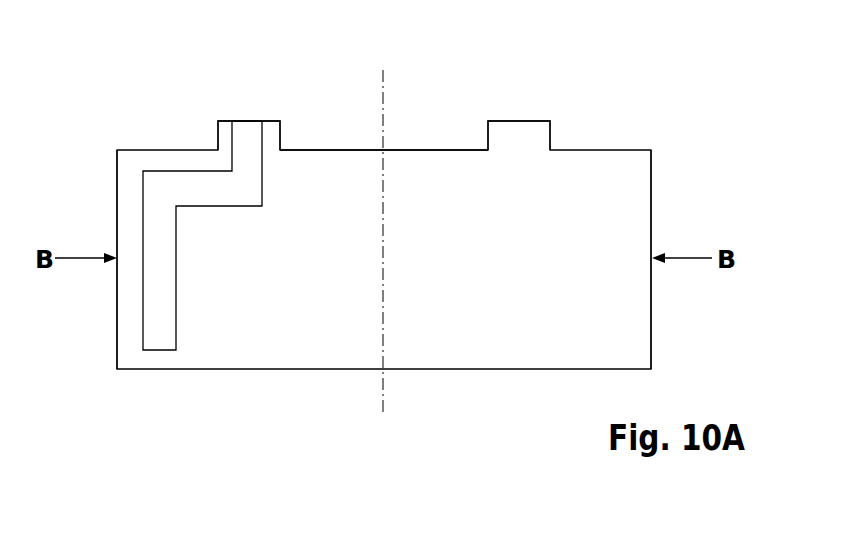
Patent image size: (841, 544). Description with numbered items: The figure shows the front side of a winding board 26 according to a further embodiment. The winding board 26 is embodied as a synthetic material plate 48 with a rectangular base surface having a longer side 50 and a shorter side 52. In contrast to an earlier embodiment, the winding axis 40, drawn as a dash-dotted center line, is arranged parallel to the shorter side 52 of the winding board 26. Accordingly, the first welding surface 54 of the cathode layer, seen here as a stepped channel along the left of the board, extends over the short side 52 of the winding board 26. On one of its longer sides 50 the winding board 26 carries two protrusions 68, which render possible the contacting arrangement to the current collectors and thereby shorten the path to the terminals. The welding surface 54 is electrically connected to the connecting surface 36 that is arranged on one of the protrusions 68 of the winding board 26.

The winding board 26 is at (626, 82).
The connecting surface 36 is at (246, 132).
The winding axis 40 is at (384, 83).
The synthetic material plate 48 is at (634, 200).
The longer side 50 is at (324, 150).
The shorter side 52 is at (118, 330).
The first welding surface 54 is at (157, 190).
The protrusion 68 is at (222, 140).